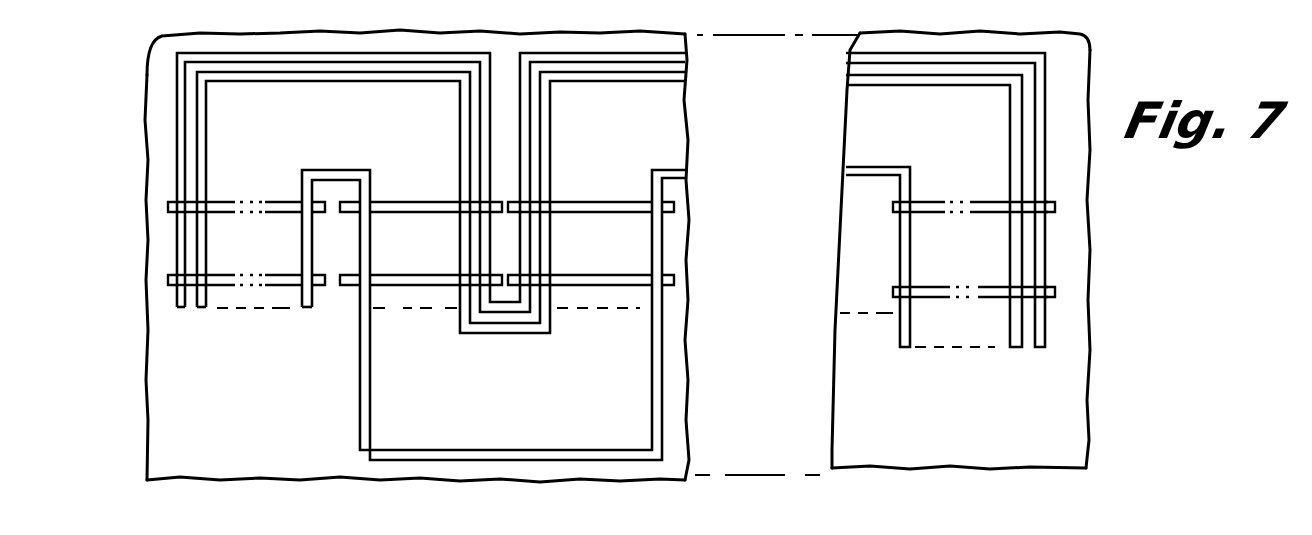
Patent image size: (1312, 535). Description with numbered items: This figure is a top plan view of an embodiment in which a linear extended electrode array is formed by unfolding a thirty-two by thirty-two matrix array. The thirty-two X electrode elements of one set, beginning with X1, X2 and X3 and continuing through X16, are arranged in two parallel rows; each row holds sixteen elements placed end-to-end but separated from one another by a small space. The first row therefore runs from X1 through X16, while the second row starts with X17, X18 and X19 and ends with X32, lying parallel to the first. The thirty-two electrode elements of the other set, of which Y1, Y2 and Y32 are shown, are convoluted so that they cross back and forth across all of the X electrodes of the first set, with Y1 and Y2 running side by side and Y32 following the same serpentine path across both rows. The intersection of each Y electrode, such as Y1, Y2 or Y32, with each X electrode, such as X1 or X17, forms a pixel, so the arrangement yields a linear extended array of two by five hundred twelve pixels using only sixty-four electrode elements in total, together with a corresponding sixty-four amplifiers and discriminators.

The X electrode element X1 is at (246, 195).
The X electrode element X2 is at (421, 195).
The X electrode element X3 is at (591, 194).
The X electrode element X16 is at (974, 197).
The X electrode element X17 is at (246, 269).
The X electrode element X18 is at (421, 269).
The X electrode element X19 is at (591, 269).
The X electrode element X32 is at (974, 281).
The Y electrode element Y1 is at (607, 213).
The Y electrode element Y2 is at (607, 223).
The Y electrode element Y32 is at (606, 313).